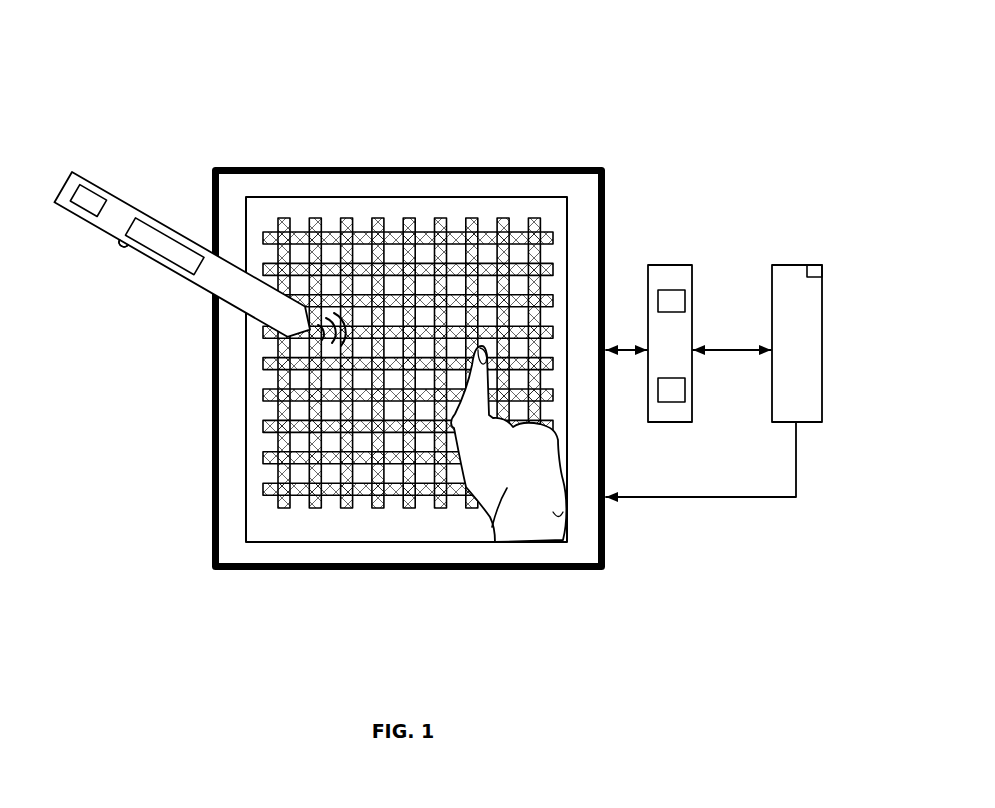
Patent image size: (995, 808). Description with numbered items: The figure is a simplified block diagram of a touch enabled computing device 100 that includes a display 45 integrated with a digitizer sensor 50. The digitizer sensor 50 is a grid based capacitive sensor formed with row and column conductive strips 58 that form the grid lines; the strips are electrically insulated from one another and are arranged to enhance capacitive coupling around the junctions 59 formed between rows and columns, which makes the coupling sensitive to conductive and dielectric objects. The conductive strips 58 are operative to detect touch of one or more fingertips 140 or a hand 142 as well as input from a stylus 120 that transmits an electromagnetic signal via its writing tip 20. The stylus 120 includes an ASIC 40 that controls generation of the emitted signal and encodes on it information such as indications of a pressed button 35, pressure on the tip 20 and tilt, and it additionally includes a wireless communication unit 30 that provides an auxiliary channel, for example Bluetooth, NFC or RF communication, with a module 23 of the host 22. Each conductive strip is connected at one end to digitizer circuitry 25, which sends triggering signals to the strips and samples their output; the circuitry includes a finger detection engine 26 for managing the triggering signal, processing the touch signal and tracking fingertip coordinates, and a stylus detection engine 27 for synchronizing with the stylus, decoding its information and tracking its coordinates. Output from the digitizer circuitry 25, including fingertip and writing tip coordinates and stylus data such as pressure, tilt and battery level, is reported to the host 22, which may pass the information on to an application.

The computing device 100 is at (403, 80).
The writing tip 20 is at (265, 353).
The display 45 is at (527, 166).
The digitizer sensor 50 is at (569, 243).
The conductive strips 58 is at (470, 218).
The junctions 59 is at (377, 457).
The stylus 120 is at (185, 231).
The wireless communication unit 30 is at (93, 203).
The button 35 is at (117, 247).
The ASIC 40 is at (153, 257).
The digitizer circuitry 25 is at (668, 265).
The finger detection engine 26 is at (685, 300).
The stylus detection engine 27 is at (685, 396).
The host 22 is at (800, 265).
The module 23 is at (810, 277).
The fingertip 140 is at (480, 350).
The hand 142 is at (492, 527).